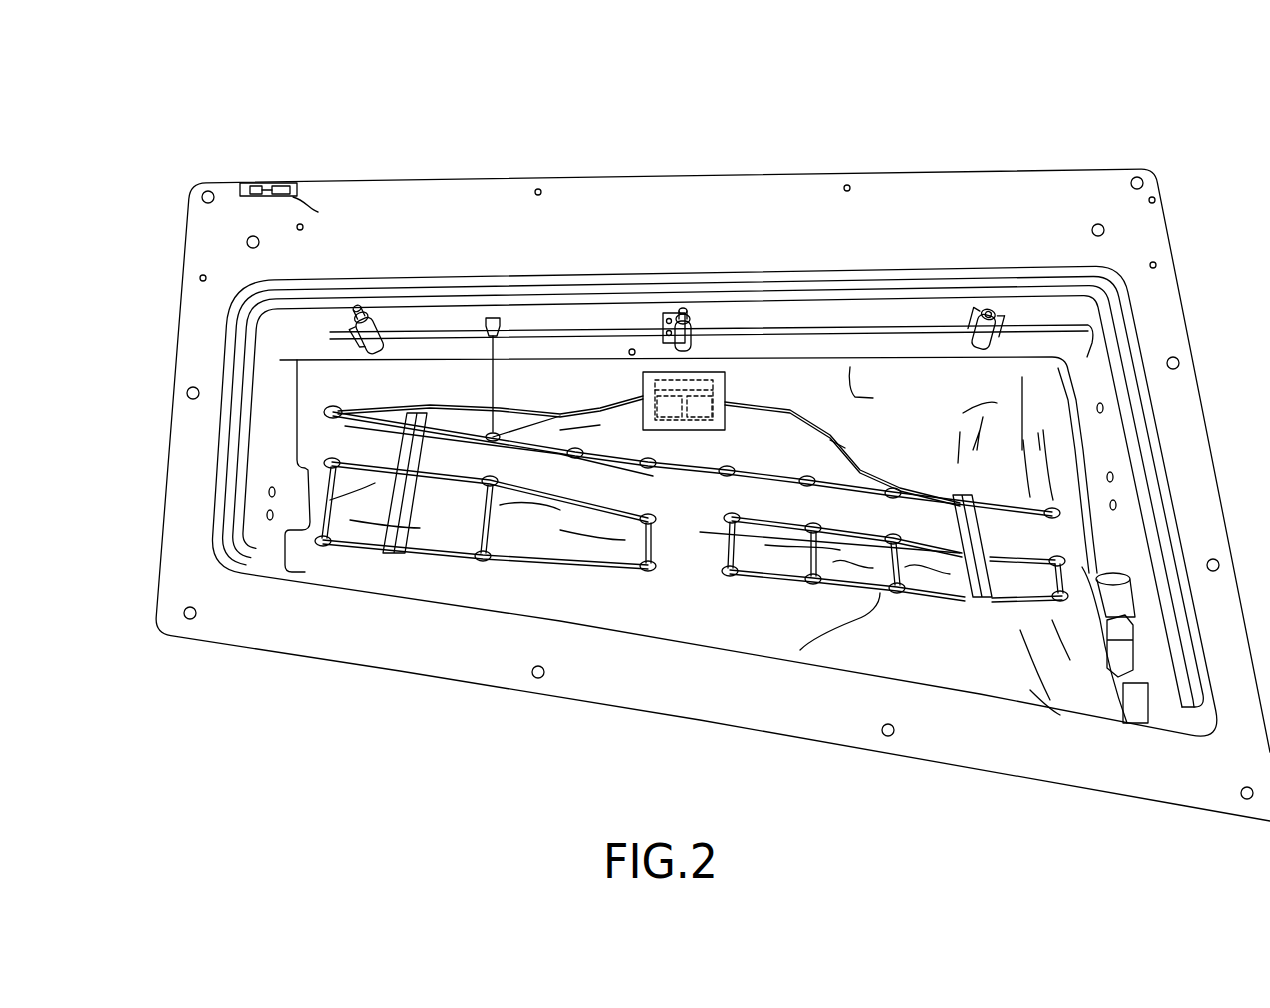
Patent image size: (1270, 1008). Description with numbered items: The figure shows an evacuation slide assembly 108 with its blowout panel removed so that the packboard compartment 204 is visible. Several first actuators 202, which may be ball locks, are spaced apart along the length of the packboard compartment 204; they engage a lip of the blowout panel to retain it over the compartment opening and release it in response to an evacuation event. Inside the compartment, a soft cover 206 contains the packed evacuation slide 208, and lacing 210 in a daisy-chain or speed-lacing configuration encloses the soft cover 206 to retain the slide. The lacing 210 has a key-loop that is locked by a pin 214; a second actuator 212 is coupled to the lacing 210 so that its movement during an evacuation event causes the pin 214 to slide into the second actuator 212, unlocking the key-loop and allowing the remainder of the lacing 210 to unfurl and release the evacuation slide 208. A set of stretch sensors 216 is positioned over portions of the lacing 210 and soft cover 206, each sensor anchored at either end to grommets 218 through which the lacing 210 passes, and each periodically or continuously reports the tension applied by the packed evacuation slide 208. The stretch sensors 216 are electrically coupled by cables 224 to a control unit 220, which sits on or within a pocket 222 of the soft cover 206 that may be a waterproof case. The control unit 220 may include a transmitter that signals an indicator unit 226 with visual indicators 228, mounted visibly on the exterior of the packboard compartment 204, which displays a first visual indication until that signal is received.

The evacuation slide assembly 108 is at (196, 138).
The first actuator 202 is at (383, 328).
The packboard compartment 204 is at (228, 652).
The soft cover 206 is at (870, 640).
The evacuation slide 208 is at (368, 517).
The lacing 210 is at (790, 470).
The second actuator 212 is at (500, 316).
The pin 214 is at (493, 395).
The set of stretch sensors 216 is at (415, 455).
The grommets 218 is at (327, 412).
The control unit 220 is at (643, 397).
The pocket 222 is at (727, 382).
The cables 224 is at (573, 432).
The indicator unit 226 is at (271, 183).
The visual indicators 228 is at (318, 212).